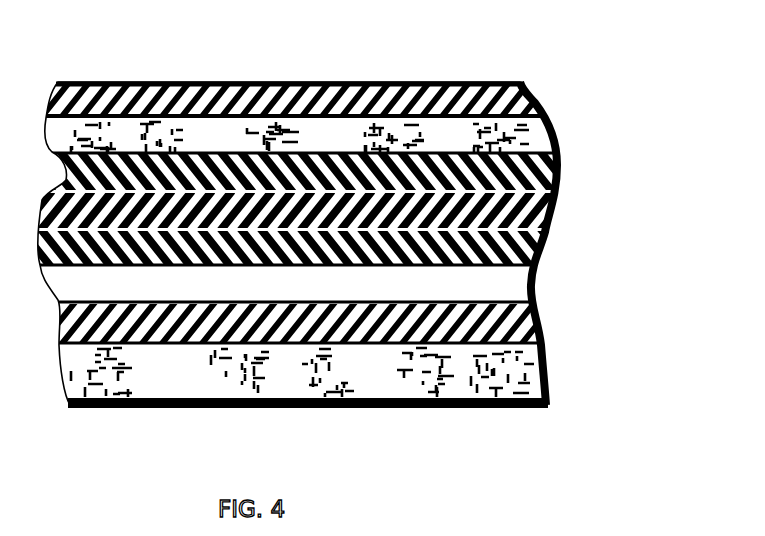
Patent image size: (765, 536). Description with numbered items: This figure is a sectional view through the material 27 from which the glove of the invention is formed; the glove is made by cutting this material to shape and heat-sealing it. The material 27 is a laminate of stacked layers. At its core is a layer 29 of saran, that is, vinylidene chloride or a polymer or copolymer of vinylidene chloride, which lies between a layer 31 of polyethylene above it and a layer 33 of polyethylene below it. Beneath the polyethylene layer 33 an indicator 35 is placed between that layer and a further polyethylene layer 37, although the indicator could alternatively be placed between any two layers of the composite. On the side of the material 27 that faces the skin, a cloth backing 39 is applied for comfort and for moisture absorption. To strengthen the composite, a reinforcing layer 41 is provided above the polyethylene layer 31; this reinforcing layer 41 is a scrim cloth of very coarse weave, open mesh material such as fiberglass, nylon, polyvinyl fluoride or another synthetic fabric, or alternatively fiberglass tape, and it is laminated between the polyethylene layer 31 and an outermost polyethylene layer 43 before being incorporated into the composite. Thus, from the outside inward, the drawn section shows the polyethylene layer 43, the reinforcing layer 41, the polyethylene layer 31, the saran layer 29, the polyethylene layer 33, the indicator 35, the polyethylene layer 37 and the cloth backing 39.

The material 27 is at (208, 70).
The polyethylene layer 43 is at (498, 82).
The reinforcing layer 41 is at (528, 115).
The polyethylene layer 31 is at (557, 170).
The saran layer 29 is at (557, 213).
The polyethylene layer 33 is at (540, 249).
The indicator 35 is at (505, 290).
The polyethylene layer 37 is at (540, 320).
The cloth backing 39 is at (542, 348).